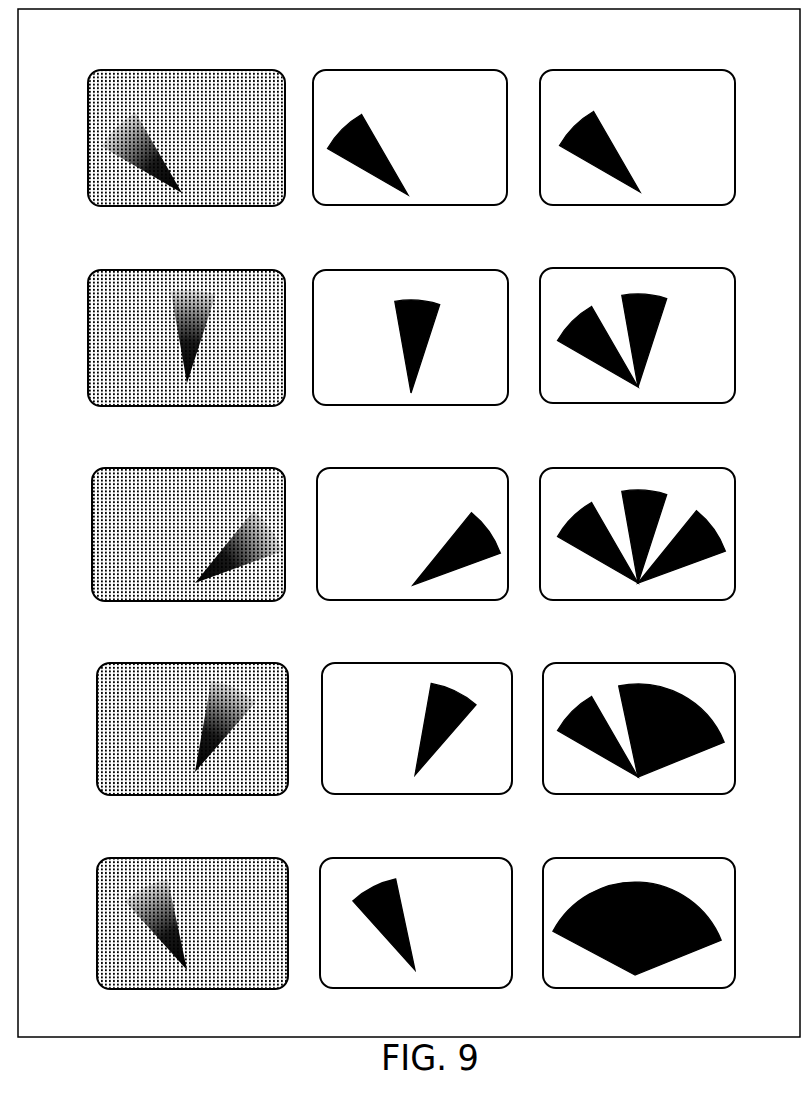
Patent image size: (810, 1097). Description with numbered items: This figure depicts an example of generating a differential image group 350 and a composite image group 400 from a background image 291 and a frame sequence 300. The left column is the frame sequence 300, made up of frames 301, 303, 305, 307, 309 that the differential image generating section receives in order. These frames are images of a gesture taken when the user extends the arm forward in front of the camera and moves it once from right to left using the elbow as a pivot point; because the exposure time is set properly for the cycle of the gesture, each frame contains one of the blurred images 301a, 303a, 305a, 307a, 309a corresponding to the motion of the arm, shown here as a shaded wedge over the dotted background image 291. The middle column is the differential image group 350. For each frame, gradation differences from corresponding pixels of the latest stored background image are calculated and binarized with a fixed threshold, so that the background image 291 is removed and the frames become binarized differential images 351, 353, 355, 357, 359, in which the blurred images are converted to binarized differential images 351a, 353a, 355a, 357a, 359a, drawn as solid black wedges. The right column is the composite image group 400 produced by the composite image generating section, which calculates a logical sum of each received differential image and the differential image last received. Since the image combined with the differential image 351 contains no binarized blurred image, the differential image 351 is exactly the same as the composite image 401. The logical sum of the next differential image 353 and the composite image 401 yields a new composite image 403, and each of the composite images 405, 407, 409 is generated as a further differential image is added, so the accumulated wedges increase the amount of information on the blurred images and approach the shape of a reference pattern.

The frame sequence 300 is at (168, 54).
The background image 291 is at (220, 100).
The frame 301 is at (206, 142).
The blurred image 301a is at (150, 185).
The frame 303 is at (206, 341).
The blurred image 303a is at (187, 385).
The frame 305 is at (209, 543).
The blurred image 305a is at (205, 582).
The frame 307 is at (211, 729).
The blurred image 307a is at (205, 770).
The frame 309 is at (211, 924).
The blurred image 309a is at (187, 975).
The differential image group 350 is at (396, 54).
The differential image 351 is at (429, 143).
The binarized differential image 351a is at (392, 187).
The differential image 353 is at (429, 334).
The binarized differential image 353a is at (412, 385).
The differential image 355 is at (431, 539).
The binarized differential image 355a is at (432, 580).
The differential image 357 is at (434, 728).
The binarized differential image 357a is at (428, 767).
The differential image 359 is at (433, 919).
The binarized differential image 359a is at (415, 975).
The composite image group 400 is at (623, 54).
The composite image 401 is at (735, 78).
The composite image 403 is at (735, 270).
The composite image 405 is at (735, 470).
The composite image 407 is at (735, 665).
The composite image 409 is at (735, 860).